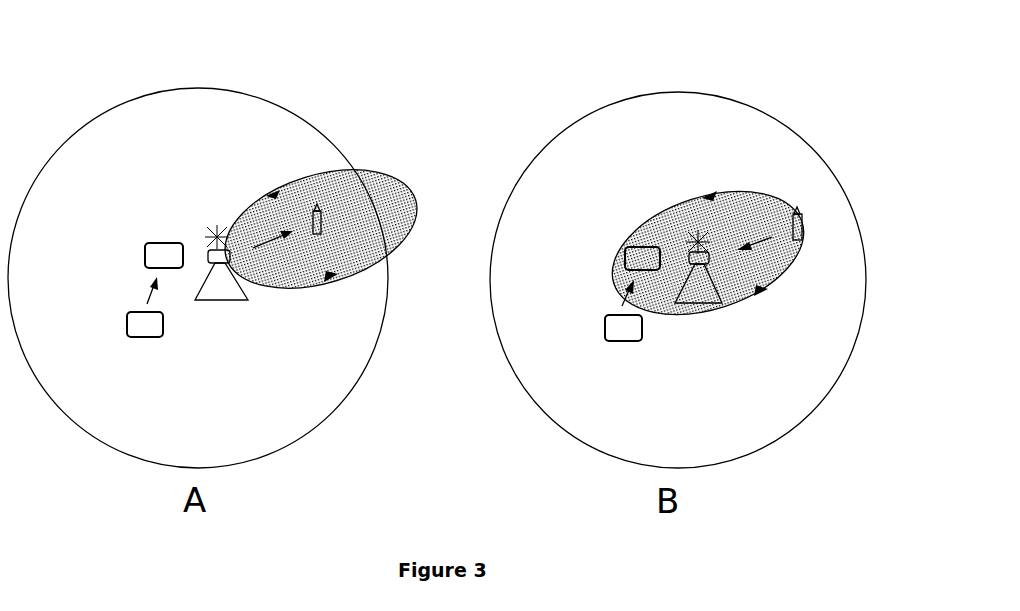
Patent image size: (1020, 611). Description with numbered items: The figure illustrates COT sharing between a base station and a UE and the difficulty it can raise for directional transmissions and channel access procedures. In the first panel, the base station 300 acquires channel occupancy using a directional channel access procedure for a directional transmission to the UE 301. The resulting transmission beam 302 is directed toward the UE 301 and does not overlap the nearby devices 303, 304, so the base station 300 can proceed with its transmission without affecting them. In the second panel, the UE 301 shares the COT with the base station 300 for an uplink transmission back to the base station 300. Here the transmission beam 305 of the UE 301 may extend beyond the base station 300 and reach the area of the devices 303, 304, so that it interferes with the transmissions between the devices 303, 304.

The base station 300 is at (209, 232).
The UE 301 is at (314, 208).
The transmission beam 302 is at (386, 172).
The device 303 is at (152, 243).
The device 304 is at (146, 338).
The transmission beam 305 is at (673, 207).